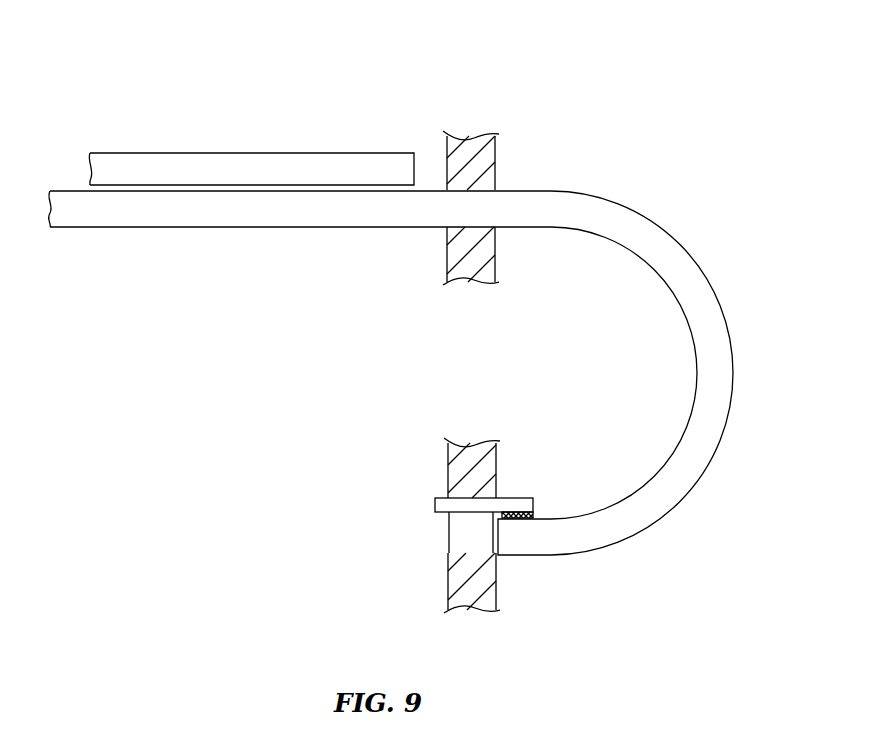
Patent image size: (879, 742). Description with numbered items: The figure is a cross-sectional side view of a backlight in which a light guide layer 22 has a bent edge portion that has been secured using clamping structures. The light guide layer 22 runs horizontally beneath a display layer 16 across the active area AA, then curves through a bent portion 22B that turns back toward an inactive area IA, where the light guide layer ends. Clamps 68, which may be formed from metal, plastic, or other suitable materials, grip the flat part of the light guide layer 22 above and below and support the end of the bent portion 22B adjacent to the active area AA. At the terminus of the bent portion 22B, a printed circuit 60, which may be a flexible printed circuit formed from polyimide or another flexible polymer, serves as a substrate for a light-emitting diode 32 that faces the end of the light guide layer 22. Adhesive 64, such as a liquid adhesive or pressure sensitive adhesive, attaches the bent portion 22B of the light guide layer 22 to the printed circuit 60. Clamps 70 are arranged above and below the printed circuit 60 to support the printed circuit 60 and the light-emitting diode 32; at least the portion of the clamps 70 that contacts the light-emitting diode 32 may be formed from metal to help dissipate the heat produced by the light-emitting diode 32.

The display layer / component 16 is at (193, 153).
The light guide layer 22 is at (240, 213).
The bent portion of light guide layer 22B is at (718, 366).
The clamps 68 is at (487, 160).
The clamps 70 is at (487, 463).
The flexible printed circuit 60 is at (435, 501).
The adhesive 64 is at (537, 511).
The light-emitting diode 32 is at (460, 532).
The active area AA is at (273, 88).
The inactive area IA is at (623, 119).